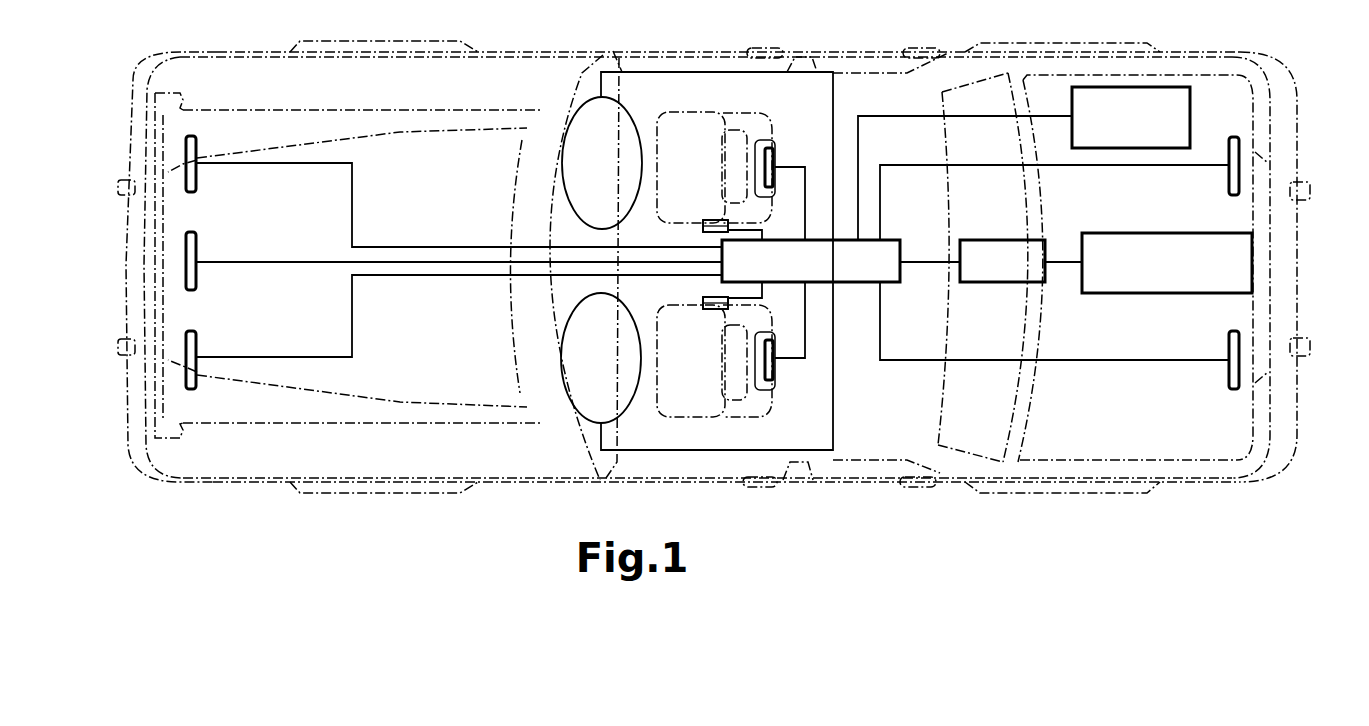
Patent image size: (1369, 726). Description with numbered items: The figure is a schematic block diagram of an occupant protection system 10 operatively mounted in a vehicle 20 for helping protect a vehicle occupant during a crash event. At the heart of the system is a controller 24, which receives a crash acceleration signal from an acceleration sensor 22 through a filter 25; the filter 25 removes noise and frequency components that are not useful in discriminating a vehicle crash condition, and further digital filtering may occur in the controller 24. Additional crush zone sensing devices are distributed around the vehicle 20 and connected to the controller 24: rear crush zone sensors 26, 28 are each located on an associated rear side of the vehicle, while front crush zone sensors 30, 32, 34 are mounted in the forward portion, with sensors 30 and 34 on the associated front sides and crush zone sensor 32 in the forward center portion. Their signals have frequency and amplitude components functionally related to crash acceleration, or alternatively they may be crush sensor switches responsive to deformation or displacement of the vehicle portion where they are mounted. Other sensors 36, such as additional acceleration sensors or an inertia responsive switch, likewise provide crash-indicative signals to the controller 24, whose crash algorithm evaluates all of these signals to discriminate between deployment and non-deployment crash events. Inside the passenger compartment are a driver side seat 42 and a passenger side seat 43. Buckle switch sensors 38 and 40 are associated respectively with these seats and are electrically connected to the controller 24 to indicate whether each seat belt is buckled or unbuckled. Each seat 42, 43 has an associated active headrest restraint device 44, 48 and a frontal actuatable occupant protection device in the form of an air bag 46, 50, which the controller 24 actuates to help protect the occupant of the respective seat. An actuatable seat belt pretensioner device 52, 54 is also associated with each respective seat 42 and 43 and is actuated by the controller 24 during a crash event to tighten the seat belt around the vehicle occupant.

The occupant protection system 10 is at (853, 363).
The vehicle 20 is at (853, 483).
The acceleration sensor 22 is at (1137, 233).
The controller 24 is at (893, 240).
The filter 25 is at (992, 240).
The crush zone sensor 26 is at (1239, 378).
The crush zone sensor 28 is at (1239, 147).
The front crush zone sensor 30 is at (186, 367).
The front crush zone sensor 32 is at (186, 266).
The front crush zone sensor 34 is at (186, 178).
The other sensors 36 is at (1177, 110).
The buckle switch sensor 38 is at (703, 298).
The buckle switch sensor 40 is at (703, 228).
The driver side seat 42 is at (714, 361).
The passenger side seat 43 is at (714, 167).
The active headrest restraint device 44 is at (768, 375).
The air bag 46 is at (588, 397).
The active headrest restraint device 48 is at (768, 160).
The air bag 50 is at (597, 123).
The seat belt pretensioner device 52 is at (710, 310).
The seat belt pretensioner device 54 is at (722, 220).